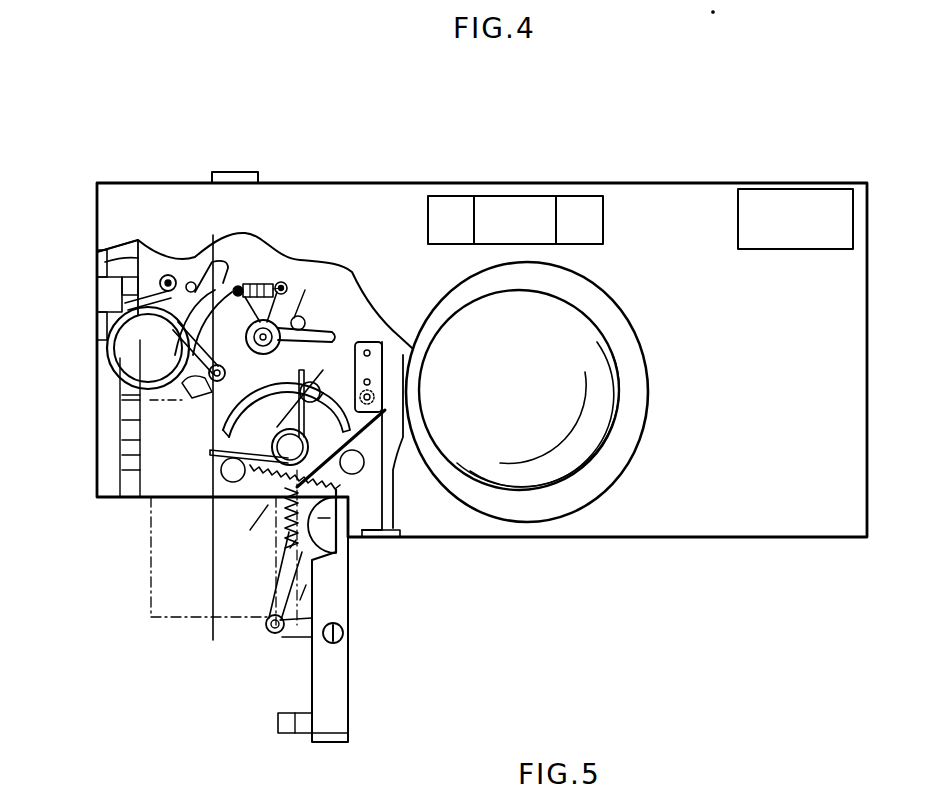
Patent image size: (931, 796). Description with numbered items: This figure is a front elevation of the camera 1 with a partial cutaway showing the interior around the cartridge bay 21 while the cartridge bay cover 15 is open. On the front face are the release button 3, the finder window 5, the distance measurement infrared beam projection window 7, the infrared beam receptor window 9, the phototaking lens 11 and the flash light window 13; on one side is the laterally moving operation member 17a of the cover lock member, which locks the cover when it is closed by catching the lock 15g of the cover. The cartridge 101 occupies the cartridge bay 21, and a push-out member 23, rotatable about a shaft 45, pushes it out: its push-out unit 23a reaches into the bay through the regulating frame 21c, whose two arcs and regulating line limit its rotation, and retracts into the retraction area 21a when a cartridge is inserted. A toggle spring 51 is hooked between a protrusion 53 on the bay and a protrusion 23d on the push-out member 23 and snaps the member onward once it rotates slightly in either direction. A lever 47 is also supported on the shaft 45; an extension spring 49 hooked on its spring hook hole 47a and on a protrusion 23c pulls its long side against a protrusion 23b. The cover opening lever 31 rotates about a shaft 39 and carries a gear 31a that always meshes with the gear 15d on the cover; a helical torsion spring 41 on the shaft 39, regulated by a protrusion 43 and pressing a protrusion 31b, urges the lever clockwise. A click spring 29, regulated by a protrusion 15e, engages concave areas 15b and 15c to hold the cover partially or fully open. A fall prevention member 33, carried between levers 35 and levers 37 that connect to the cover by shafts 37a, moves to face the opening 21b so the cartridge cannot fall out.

The camera 1 is at (782, 514).
The release button 3 is at (258, 236).
The finder window 5 is at (533, 205).
The distance measurement infrared beam projection window 7 is at (458, 208).
The distance measurement infrared beam receptor window 9 is at (588, 208).
The phototaking lens 11 is at (617, 472).
The flash light window 13 is at (802, 202).
The cartridge bay cover 15 is at (350, 690).
The concave area 15b is at (350, 540).
The concave area 15c is at (386, 520).
The gear 15d is at (268, 630).
The protrusion 15e is at (392, 478).
The lock 15g is at (300, 735).
The operation member 17a is at (108, 295).
The cartridge bay 21 is at (133, 497).
The retraction area 21a is at (205, 282).
The opening 21b is at (270, 505).
The regulating frame 21c is at (190, 283).
The push-out member 23 is at (175, 465).
The push-out unit 23a is at (150, 400).
The protrusion 23b is at (330, 348).
The protrusion 23c is at (238, 285).
The protrusion 23d is at (210, 393).
The click spring 29 is at (387, 458).
The cover opening lever 31 is at (287, 515).
The gear 31a is at (292, 548).
The protrusion 31b is at (372, 340).
The fall prevention member 33 is at (300, 600).
The lever 35 is at (300, 568).
The lever 37 is at (308, 620).
The shaft 37a is at (345, 638).
The shaft 39 is at (383, 452).
The helical torsion spring 41 is at (170, 505).
The protrusion 43 is at (240, 490).
The shaft 45 is at (283, 288).
The lever 47 is at (336, 338).
The spring hook hole 47a is at (300, 316).
The extension spring 49 is at (266, 320).
The toggle spring 51 is at (108, 352).
The protrusion 53 is at (110, 268).
The cartridge 101 is at (150, 590).